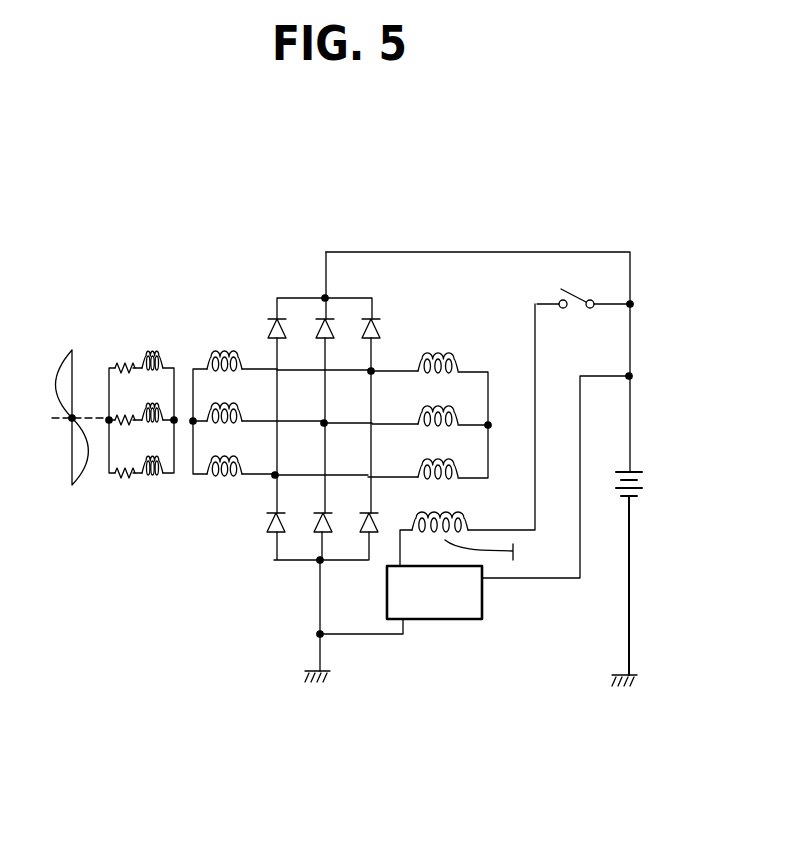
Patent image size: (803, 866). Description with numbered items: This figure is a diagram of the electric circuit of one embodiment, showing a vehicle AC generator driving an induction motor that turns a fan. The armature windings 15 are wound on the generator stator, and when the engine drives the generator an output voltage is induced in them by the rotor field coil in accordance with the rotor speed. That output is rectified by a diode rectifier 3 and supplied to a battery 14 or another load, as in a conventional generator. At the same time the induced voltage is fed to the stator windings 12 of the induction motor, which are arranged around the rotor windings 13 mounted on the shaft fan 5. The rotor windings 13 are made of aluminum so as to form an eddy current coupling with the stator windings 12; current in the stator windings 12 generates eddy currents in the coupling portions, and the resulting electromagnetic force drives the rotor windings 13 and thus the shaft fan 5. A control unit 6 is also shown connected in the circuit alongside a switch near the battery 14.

The rectifier 3 is at (353, 298).
The shaft fan 5 is at (78, 482).
The control circuit 6 is at (438, 620).
The stator windings 12 is at (223, 482).
The rotor windings 13 is at (150, 482).
The battery 14 is at (641, 484).
The armature windings 15 is at (440, 360).